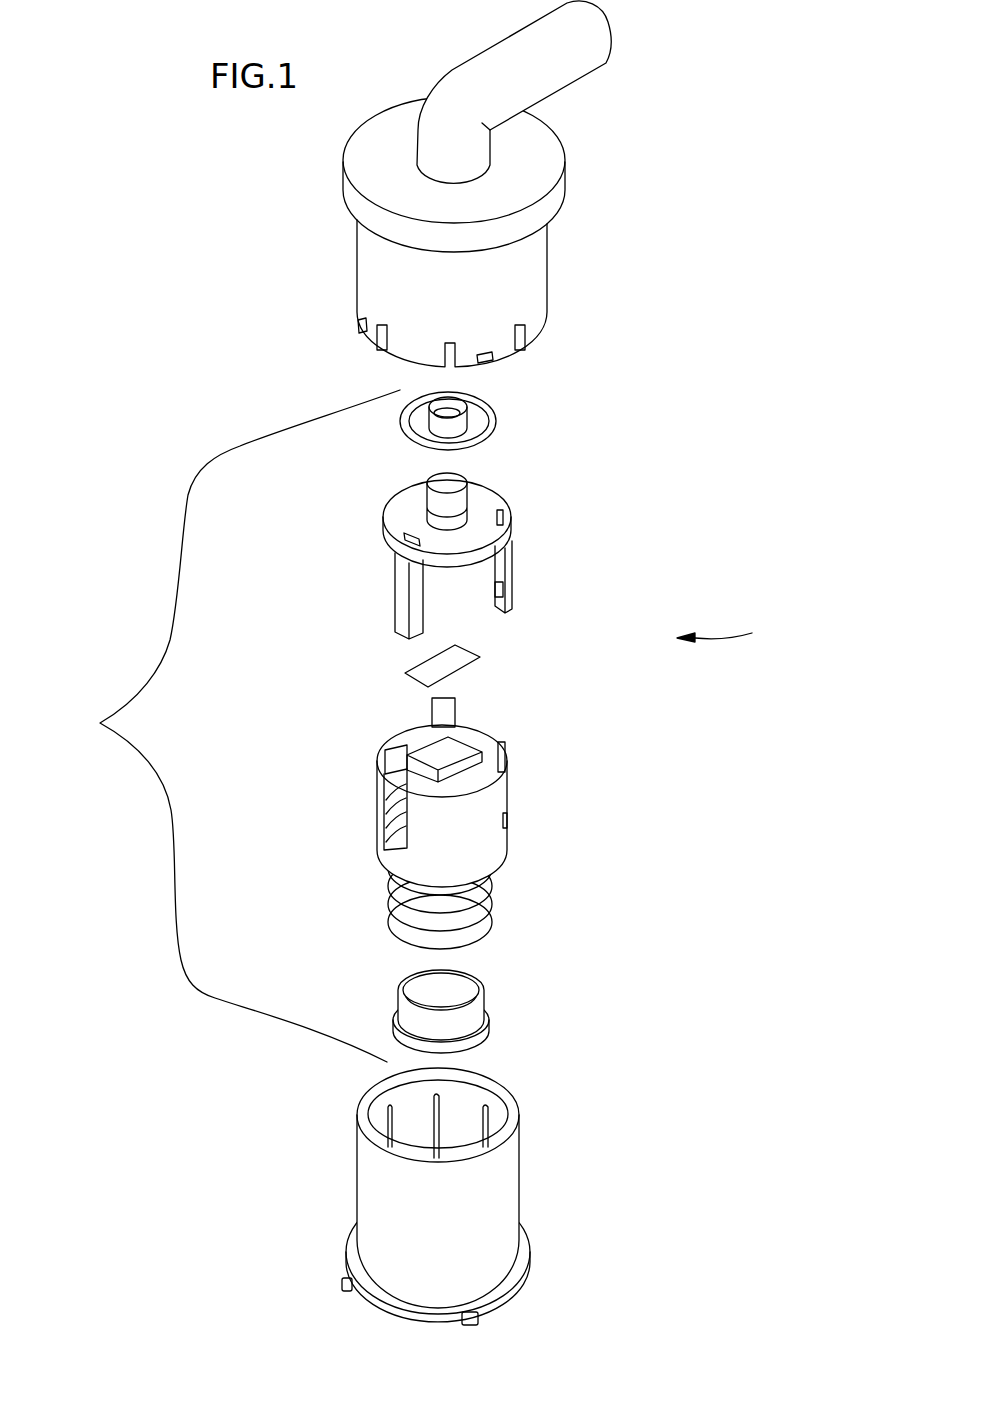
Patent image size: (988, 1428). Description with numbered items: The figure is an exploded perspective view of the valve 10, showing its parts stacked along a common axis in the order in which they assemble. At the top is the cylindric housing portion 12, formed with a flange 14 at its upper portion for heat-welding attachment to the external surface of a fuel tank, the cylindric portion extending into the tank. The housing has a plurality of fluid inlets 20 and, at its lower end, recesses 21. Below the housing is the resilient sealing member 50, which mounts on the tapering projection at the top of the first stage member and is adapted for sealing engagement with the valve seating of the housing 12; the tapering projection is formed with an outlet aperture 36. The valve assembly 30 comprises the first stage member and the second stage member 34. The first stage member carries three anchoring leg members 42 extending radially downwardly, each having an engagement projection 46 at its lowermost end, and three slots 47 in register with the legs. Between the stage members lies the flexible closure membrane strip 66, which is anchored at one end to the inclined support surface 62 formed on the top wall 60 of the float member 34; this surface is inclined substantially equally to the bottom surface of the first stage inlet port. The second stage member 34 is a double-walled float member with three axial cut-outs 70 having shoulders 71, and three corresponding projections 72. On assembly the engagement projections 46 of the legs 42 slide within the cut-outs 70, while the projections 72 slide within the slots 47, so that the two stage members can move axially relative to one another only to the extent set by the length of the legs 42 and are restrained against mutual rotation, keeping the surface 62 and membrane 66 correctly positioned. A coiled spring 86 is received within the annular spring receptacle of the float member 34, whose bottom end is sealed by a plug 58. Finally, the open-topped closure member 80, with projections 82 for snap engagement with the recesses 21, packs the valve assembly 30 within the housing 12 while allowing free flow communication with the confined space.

The valve 10 is at (729, 629).
The cylindric housing portion 12 is at (528, 285).
The flange 14 is at (540, 218).
The fluid inlets 20 is at (512, 350).
The recesses 21 is at (360, 325).
The valve assembly 30 is at (233, 726).
The second stage member 34 is at (490, 505).
The outlet aperture 36 is at (447, 482).
The anchoring leg members 42 is at (510, 570).
The engagement projection 46 is at (497, 600).
The slots 47 is at (500, 514).
The resilient sealing member 50 is at (492, 406).
The plug 58 is at (490, 1020).
The top wall 60 is at (477, 768).
The inclined support surface 62 is at (424, 750).
The flexible closure membrane strip 66 is at (427, 672).
The axial cut-outs 70 is at (507, 812).
The shoulders 71 is at (392, 790).
The projections 72 is at (446, 712).
The closure member 80 is at (480, 1197).
The projections 82 is at (340, 1286).
The coiled spring 86 is at (392, 913).